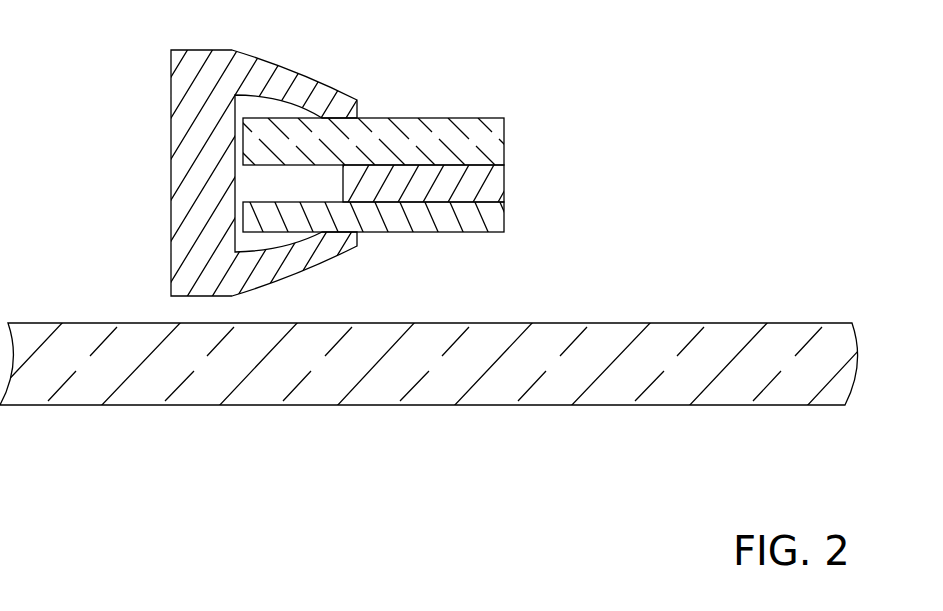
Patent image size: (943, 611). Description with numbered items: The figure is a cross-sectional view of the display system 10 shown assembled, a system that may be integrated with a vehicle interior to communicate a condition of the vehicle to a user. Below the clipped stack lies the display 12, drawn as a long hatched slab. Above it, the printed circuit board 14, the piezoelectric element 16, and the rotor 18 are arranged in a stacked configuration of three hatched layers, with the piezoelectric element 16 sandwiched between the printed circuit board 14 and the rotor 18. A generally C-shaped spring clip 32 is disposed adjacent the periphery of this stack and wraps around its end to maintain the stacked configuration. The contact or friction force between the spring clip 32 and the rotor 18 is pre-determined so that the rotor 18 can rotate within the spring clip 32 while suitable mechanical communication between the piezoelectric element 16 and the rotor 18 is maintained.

The display system 10 is at (684, 93).
The display 12 is at (733, 322).
The printed circuit board 14 is at (504, 214).
The piezoelectric element 16 is at (504, 176).
The rotor 18 is at (504, 126).
The spring clips 32 is at (171, 89).